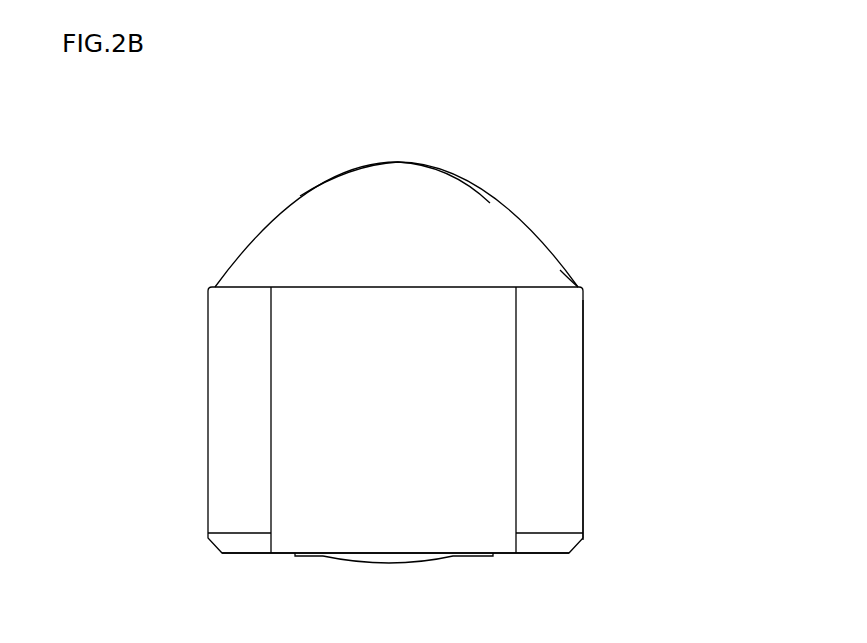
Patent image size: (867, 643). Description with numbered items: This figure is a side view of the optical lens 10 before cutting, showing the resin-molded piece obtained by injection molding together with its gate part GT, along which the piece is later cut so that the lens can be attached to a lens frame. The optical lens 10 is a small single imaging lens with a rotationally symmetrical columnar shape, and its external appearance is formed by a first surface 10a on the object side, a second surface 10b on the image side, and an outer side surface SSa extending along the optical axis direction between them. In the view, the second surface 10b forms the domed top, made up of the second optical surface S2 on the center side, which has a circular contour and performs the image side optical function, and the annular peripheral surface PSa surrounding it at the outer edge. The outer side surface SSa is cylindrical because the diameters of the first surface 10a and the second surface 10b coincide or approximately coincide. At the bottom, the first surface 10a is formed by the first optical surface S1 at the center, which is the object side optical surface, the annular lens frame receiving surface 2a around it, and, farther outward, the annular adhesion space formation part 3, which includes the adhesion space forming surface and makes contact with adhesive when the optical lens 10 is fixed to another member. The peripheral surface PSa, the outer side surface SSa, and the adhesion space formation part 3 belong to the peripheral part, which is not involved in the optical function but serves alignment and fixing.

The optical lens 10 is at (606, 107).
The second surface 10b is at (586, 188).
The second optical surface S2 is at (473, 188).
The peripheral surface PSa is at (578, 287).
The outer side surface SSa is at (583, 376).
The gate part GT is at (282, 422).
The adhesion space formation part 3 is at (241, 572).
The lens frame receiving surface 2a is at (316, 556).
The first optical surface S1 is at (433, 562).
The first surface 10a is at (540, 572).